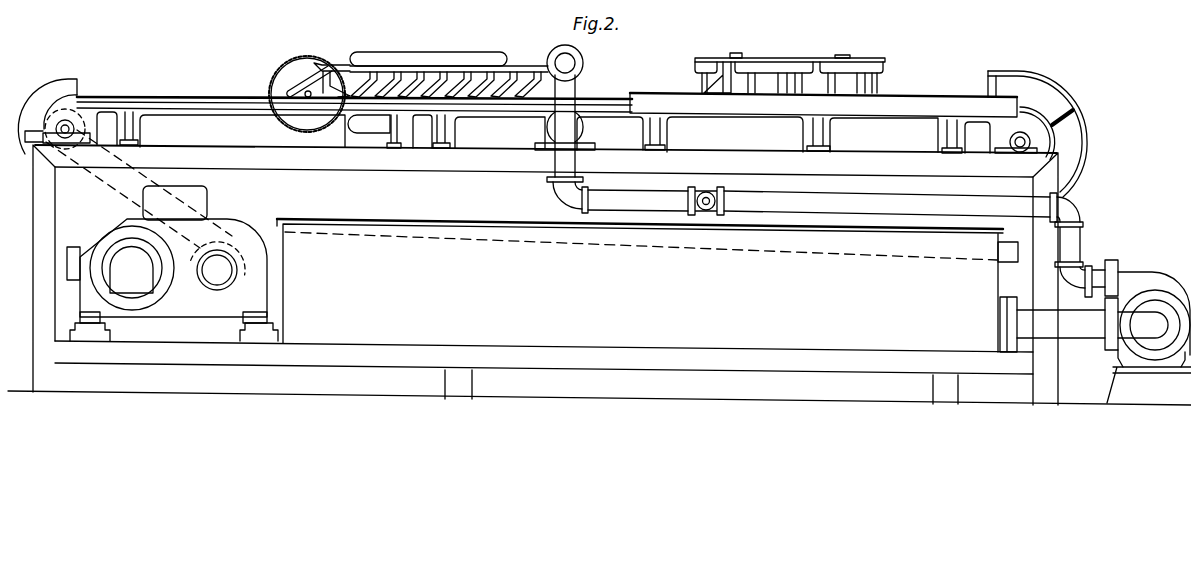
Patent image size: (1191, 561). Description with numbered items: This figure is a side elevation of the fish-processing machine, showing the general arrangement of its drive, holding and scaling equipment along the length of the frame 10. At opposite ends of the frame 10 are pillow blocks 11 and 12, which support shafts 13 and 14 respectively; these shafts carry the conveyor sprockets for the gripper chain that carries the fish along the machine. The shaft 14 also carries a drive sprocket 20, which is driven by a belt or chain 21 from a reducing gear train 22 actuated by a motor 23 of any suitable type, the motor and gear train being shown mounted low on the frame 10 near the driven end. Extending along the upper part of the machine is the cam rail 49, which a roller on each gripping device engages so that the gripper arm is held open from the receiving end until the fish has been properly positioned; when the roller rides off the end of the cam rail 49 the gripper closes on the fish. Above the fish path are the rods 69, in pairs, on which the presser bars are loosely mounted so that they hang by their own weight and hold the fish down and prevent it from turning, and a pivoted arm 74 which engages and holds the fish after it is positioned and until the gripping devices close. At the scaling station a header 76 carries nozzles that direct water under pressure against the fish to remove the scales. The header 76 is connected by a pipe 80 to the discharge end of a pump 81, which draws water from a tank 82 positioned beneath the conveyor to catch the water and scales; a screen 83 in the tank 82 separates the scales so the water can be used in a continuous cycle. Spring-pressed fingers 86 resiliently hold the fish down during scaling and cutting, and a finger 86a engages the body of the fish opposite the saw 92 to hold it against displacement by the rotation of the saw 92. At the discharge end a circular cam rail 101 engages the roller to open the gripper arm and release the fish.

The frame 10 is at (422, 162).
The pillow block 11 is at (1024, 133).
The pillow block 12 is at (69, 125).
The shaft 13 is at (1029, 142).
The shaft 14 is at (78, 123).
The drive sprocket 20 is at (36, 106).
The belt or chain 21 is at (114, 190).
The reducing gear train 22 is at (228, 262).
The motor 23 is at (137, 283).
The cam rail 49 is at (905, 99).
The rods 69 is at (797, 93).
The pivoted arm 74 is at (724, 60).
The header 76 is at (432, 55).
The pipe 80 is at (576, 87).
The pump 81 is at (1157, 292).
The tank 82 is at (691, 285).
The screen 83 is at (872, 257).
The spring-pressed fingers 86 is at (477, 80).
The finger 86a is at (292, 92).
The saw 92 is at (305, 58).
The circular cam rail 101 is at (38, 85).